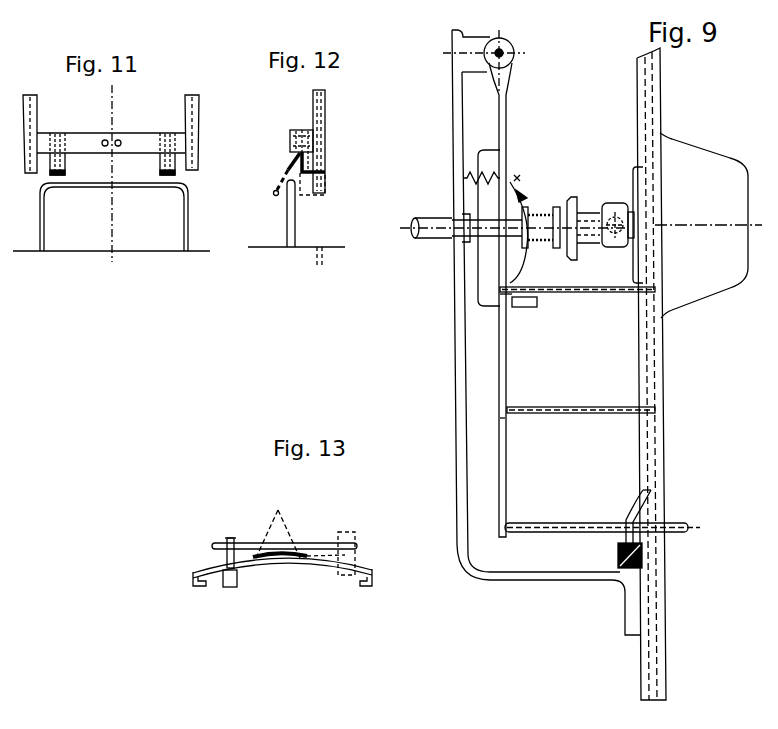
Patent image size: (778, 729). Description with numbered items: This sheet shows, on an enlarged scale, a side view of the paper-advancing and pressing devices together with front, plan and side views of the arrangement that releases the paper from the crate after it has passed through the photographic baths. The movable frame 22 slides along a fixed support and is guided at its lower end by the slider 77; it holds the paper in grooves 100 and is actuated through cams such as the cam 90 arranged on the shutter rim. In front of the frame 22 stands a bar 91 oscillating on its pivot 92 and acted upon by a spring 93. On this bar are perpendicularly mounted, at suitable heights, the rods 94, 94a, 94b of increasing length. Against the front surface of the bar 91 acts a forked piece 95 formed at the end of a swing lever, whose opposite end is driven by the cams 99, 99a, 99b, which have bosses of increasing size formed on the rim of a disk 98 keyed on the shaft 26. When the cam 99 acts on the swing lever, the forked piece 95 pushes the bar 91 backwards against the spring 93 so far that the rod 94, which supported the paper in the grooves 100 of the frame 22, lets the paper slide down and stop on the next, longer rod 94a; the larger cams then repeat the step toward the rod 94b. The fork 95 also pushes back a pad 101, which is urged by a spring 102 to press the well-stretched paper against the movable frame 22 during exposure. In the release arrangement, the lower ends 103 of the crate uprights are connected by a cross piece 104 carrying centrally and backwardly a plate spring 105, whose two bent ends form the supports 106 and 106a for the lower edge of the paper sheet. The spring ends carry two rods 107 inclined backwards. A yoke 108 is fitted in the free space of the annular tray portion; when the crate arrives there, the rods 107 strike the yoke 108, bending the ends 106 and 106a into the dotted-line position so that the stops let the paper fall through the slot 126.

In FIG. 9, the movable frame 22 is at (668, 364).
In FIG. 9, the shaft 26 is at (436, 236).
In FIG. 9, the slider 77 is at (645, 562).
In FIG. 11, the cam 90 is at (197, 0).
In FIG. 9, the bar 91 is at (507, 108).
In FIG. 9, the pivot 92 is at (514, 57).
In FIG. 9, the spring 93 is at (470, 176).
In FIG. 9, the rod 94 is at (605, 293).
In FIG. 9, the rod 94a is at (596, 414).
In FIG. 9, the rod 94b is at (582, 533).
In FIG. 9, the forked piece 95 is at (505, 246).
In FIG. 9, the disk 98 is at (490, 303).
In FIG. 9, the cam 99 is at (519, 178).
In FIG. 9, the cam 99a is at (528, 196).
In FIG. 9, the cam 99b is at (527, 308).
In FIG. 9, the grooves 100 is at (660, 490).
In FIG. 9, the pad 101 is at (638, 263).
In FIG. 9, the spring 102 is at (545, 250).
In FIG. 11, the lower ends 103 is at (32, 172).
In FIG. 12, the lower ends 103 is at (322, 103).
In FIG. 13, the lower ends 103 is at (195, 588).
In FIG. 11, the cross piece 104 is at (97, 140).
In FIG. 12, the cross piece 104 is at (318, 130).
In FIG. 13, the cross piece 104 is at (275, 569).
In FIG. 11, the plate spring 105 is at (135, 141).
In FIG. 12, the plate spring 105 is at (291, 136).
In FIG. 13, the plate spring 105 is at (280, 522).
In FIG. 11, the support 106 is at (65, 168).
In FIG. 12, the support 106 is at (327, 173).
In FIG. 13, the support 106 is at (230, 588).
In FIG. 11, the support 106a is at (160, 168).
In FIG. 12, the support 106a is at (314, 200).
In FIG. 13, the support 106a is at (352, 562).
In FIG. 11, the rods 107 is at (60, 140).
In FIG. 12, the rods 107 is at (287, 166).
In FIG. 13, the rods 107 is at (230, 540).
In FIG. 11, the yoke 108 is at (186, 228).
In FIG. 12, the yoke 108 is at (292, 225).
In FIG. 13, the yoke 108 is at (325, 543).
In FIG. 12, the slot 126 is at (318, 260).